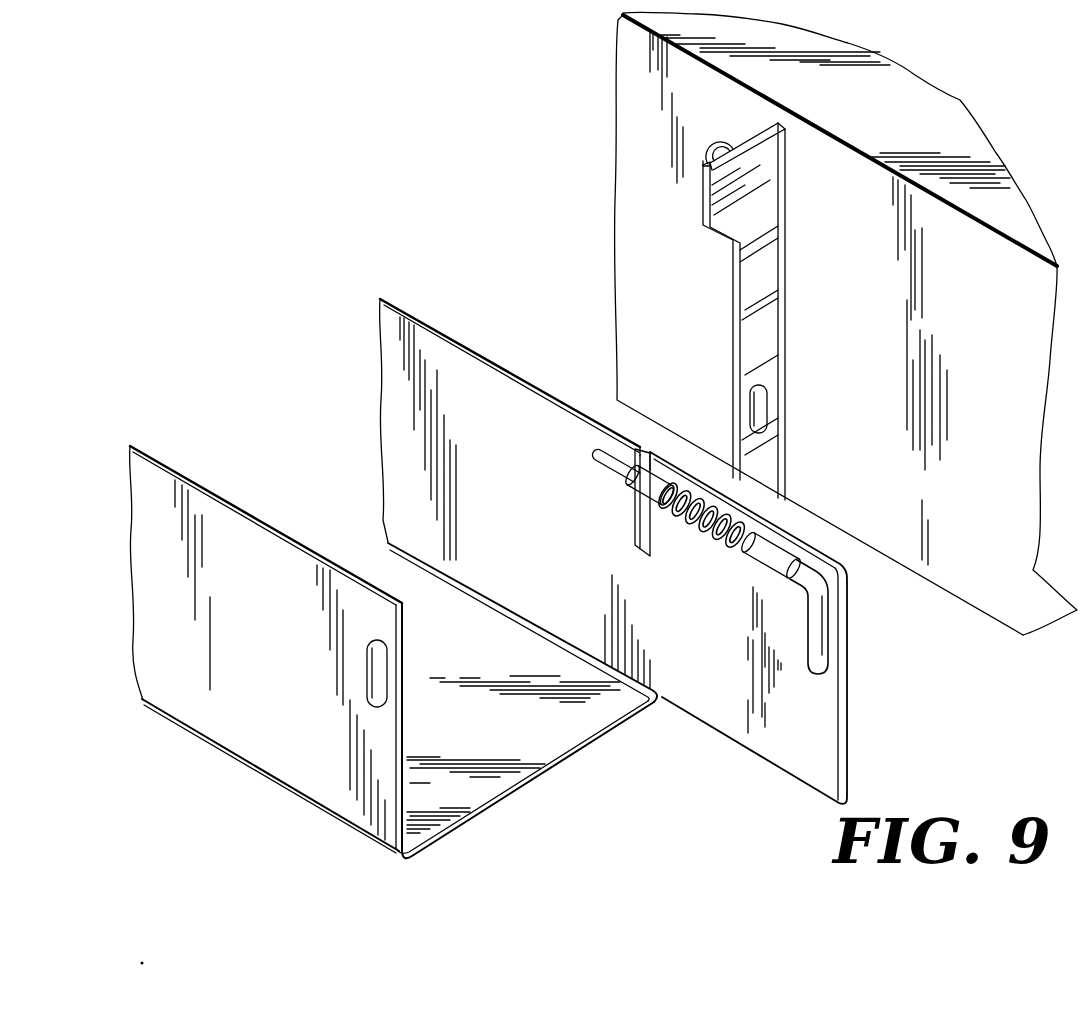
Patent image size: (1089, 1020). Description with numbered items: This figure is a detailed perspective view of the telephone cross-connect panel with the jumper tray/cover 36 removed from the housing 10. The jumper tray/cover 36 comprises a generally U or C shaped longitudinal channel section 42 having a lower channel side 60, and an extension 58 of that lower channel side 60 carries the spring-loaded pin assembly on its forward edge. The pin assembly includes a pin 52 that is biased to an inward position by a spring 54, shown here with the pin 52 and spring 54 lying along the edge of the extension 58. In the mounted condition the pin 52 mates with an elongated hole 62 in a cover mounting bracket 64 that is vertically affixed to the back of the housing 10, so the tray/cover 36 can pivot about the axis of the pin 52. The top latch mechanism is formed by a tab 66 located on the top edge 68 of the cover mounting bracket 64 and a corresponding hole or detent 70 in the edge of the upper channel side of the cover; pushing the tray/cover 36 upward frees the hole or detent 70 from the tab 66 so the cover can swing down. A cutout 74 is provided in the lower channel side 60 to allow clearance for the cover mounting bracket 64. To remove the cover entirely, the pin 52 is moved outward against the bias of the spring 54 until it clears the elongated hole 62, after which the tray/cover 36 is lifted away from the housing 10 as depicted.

The housing 10 is at (933, 120).
The jumper tray/cover 36 is at (293, 649).
The channel section 42 is at (488, 735).
The pin 52 is at (617, 463).
The spring 54 is at (732, 553).
The extension 58 is at (782, 725).
The lower channel side 60 is at (519, 500).
The elongated hole 62 is at (767, 407).
The cover mounting bracket 64 is at (740, 298).
The tab 66 is at (712, 147).
The top edge 68 is at (753, 138).
The hole or detent 70 is at (377, 667).
The cutout 74 is at (640, 535).